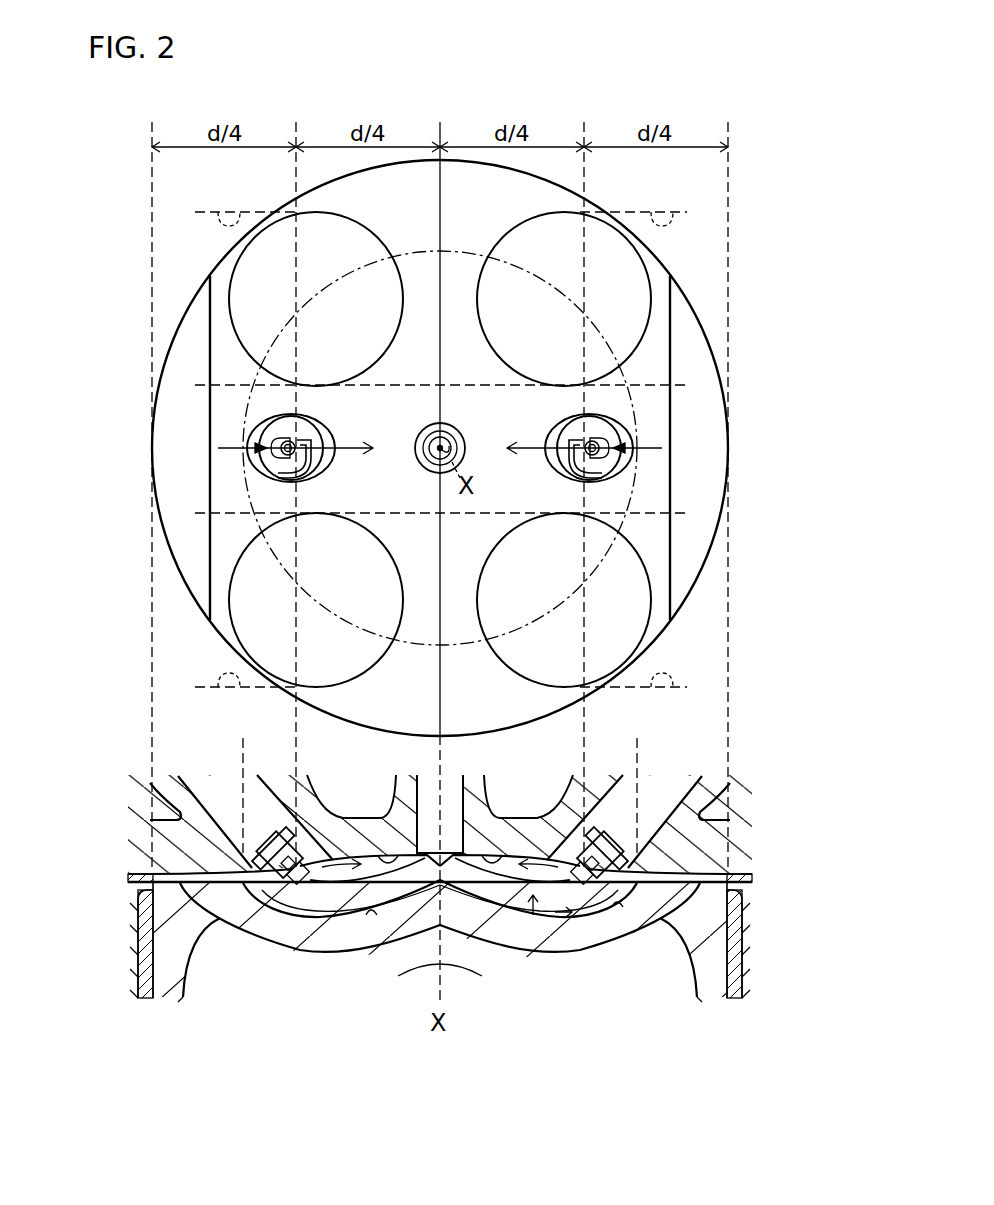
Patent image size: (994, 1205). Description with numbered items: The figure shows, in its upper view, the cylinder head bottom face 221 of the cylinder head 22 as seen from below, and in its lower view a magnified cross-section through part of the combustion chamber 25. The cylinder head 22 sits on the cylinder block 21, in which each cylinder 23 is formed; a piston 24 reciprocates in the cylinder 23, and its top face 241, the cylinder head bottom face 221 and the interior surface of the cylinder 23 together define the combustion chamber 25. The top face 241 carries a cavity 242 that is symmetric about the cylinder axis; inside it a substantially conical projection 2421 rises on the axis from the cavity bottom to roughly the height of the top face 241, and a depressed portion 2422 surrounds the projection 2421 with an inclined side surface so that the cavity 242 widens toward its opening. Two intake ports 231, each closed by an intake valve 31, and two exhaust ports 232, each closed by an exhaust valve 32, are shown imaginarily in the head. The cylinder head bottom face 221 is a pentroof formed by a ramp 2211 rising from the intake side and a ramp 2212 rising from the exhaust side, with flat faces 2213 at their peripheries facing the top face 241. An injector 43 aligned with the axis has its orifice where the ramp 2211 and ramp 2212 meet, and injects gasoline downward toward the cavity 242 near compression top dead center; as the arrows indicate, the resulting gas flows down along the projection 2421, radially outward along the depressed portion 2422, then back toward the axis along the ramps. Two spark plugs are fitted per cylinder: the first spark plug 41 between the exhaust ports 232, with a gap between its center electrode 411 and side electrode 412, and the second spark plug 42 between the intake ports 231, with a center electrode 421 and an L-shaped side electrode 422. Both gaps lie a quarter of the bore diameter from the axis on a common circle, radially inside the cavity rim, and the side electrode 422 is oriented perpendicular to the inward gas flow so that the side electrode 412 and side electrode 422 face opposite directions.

The cylinder block 21 is at (742, 967).
The cylinder head 22 is at (735, 857).
The cylinder 23 is at (155, 985).
The piston 24 is at (195, 985).
The combustion chamber 25 is at (548, 1047).
The intake valve 31 is at (524, 232).
The exhaust valve 32 is at (354, 232).
The first spark plug 41 is at (247, 432).
The second spark plug 42 is at (633, 432).
The injector 43 is at (455, 426).
The cylinder head bottom face 221 is at (516, 84).
The intake port 231 is at (670, 212).
The exhaust port 232 is at (222, 212).
The top face 241 is at (158, 874).
The cavity 242 is at (369, 918).
The center electrode 411 is at (291, 441).
The side electrode 412 is at (303, 465).
The center electrode 421 is at (577, 465).
The side electrode 422 is at (589, 441).
The ramp 2211 is at (491, 180).
The ramp 2212 is at (389, 180).
The flat face 2213 is at (163, 455).
The projection 2421 is at (460, 900).
The depressed portion 2422 is at (620, 903).